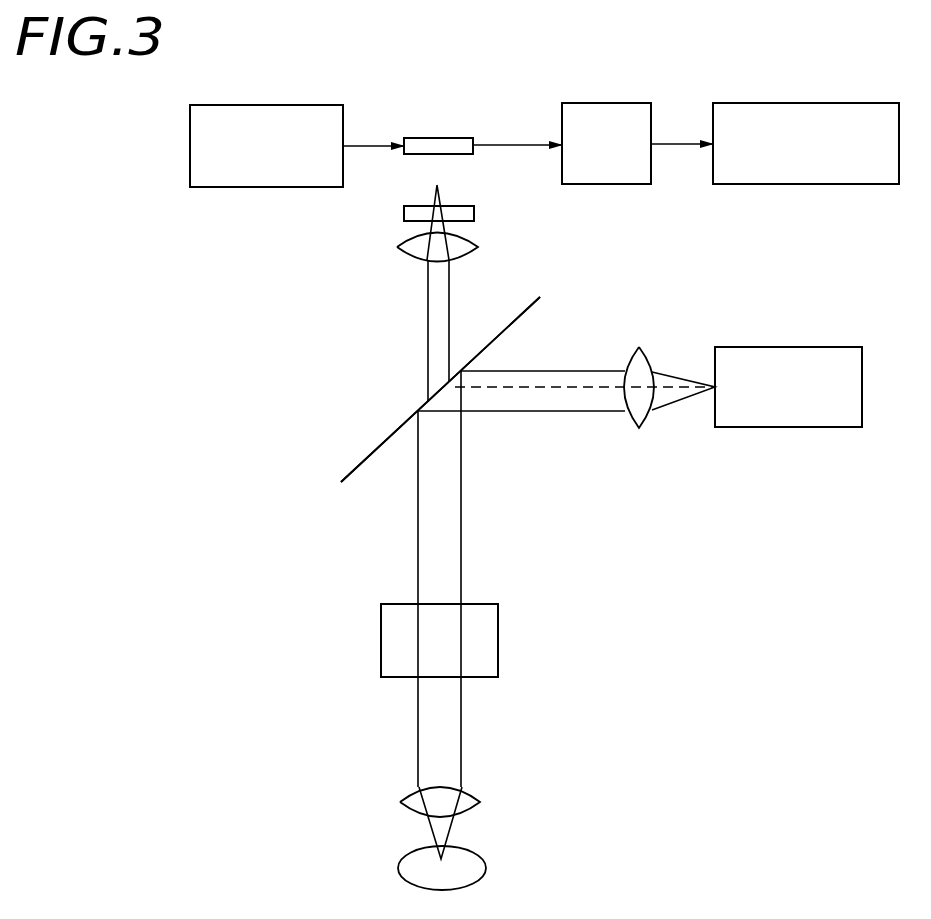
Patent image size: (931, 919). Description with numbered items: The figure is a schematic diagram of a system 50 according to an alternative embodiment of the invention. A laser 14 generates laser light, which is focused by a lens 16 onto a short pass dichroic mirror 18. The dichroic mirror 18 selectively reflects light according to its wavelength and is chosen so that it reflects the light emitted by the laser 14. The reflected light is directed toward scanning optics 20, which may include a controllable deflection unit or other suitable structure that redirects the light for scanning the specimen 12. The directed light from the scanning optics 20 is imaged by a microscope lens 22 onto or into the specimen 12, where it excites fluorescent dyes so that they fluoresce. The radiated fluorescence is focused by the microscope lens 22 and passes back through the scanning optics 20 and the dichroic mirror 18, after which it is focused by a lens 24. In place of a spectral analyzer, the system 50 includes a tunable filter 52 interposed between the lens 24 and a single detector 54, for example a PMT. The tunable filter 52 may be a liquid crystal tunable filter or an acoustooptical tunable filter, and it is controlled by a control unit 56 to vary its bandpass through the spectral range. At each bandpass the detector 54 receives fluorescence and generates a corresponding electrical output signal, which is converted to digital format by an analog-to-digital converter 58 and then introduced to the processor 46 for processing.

The specimen 12 is at (486, 866).
The laser 14 is at (822, 347).
The lens 16 is at (645, 346).
The short pass dichroic mirror 18 is at (540, 297).
The scanning optics 20 is at (498, 617).
The microscope lens 22 is at (480, 802).
The lens 24 is at (478, 247).
The processor 46 is at (835, 103).
The system 50 is at (318, 390).
The tunable filter 52 is at (404, 214).
The detector 54 is at (438, 138).
The control unit 56 is at (268, 105).
The analog-to-digital converter 58 is at (612, 103).